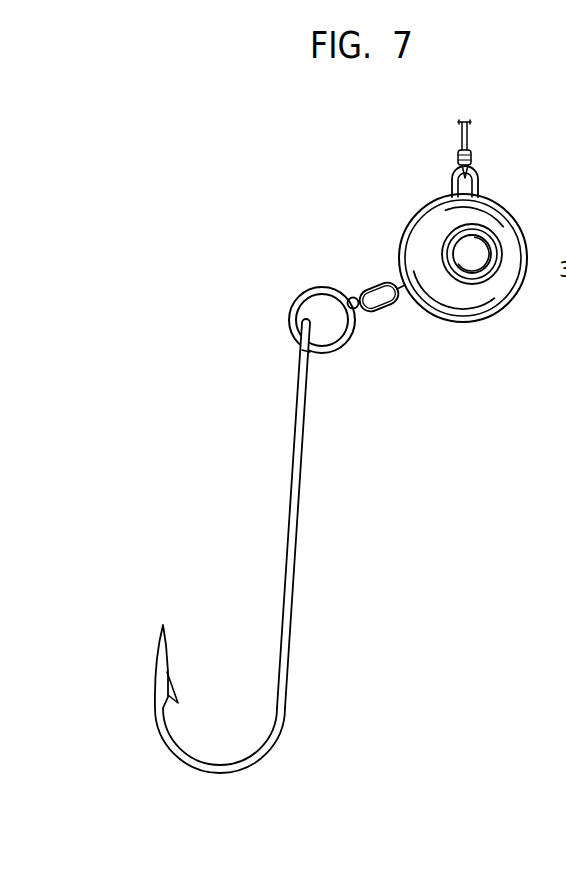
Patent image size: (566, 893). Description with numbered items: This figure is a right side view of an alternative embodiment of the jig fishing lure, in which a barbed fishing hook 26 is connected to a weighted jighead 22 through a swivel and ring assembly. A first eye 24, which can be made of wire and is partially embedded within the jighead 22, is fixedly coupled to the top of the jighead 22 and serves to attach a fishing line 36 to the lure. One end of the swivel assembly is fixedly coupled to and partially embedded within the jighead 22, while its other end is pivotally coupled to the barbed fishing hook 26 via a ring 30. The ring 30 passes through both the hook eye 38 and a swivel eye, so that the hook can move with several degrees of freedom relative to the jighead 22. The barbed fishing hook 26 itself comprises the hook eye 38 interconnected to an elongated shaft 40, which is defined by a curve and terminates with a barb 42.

The jighead 22 is at (413, 220).
The first eye 24 is at (452, 185).
The barbed fishing hook 26 is at (248, 546).
The ring 30 is at (344, 342).
The fishing line 36 is at (468, 133).
The hook eye 38 is at (299, 351).
The elongated shaft 40 is at (294, 572).
The barb 42 is at (167, 673).